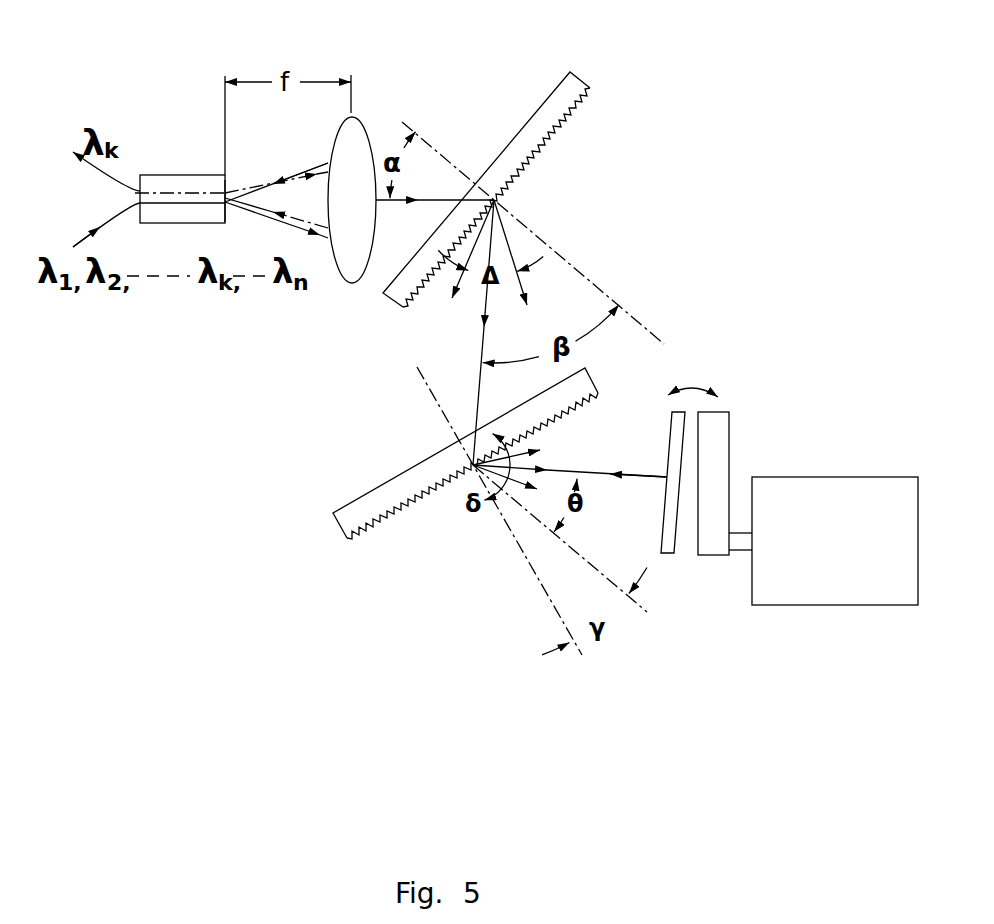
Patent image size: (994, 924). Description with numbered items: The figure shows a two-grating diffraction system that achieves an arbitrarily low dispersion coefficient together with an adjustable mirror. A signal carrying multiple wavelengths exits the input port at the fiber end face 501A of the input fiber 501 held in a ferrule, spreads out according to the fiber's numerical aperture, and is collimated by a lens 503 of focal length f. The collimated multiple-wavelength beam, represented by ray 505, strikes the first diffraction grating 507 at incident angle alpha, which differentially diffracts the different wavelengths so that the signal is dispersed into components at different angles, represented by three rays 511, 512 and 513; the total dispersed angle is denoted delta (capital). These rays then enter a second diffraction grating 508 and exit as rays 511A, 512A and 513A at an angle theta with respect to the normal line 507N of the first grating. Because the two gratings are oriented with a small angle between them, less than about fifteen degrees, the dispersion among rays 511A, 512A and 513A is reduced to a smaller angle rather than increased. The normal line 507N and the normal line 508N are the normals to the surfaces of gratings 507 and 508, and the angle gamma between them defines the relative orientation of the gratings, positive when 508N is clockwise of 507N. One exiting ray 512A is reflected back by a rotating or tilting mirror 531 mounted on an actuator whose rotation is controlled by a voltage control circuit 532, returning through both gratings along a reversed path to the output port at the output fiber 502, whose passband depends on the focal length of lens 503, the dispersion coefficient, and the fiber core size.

The input fiber 501 is at (163, 207).
The fiber end face 501A is at (227, 207).
The output fiber 502 is at (116, 171).
The lens 503 is at (355, 108).
The ray 505 is at (433, 195).
The first diffraction grating 507 is at (500, 173).
The normal line of the first grating 507N is at (579, 266).
The second diffraction grating 508 is at (371, 497).
The normal line of the second grating 508N is at (522, 556).
The ray 511 is at (456, 264).
The ray 512 is at (463, 332).
The ray 513 is at (525, 264).
The ray 511A is at (519, 488).
The ray 512A is at (570, 465).
The ray 513A is at (531, 449).
The mirror 531 is at (671, 557).
The voltage control circuit 532 is at (834, 473).